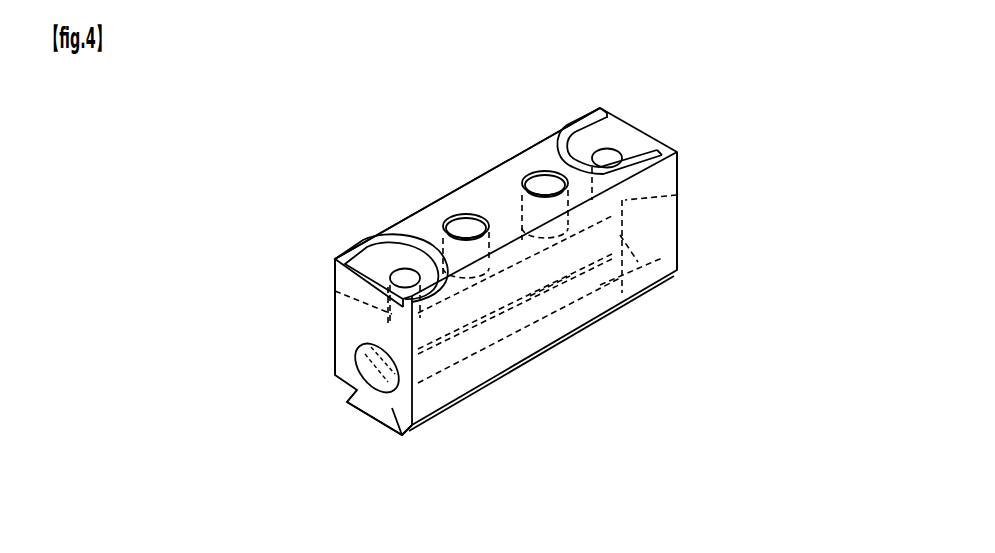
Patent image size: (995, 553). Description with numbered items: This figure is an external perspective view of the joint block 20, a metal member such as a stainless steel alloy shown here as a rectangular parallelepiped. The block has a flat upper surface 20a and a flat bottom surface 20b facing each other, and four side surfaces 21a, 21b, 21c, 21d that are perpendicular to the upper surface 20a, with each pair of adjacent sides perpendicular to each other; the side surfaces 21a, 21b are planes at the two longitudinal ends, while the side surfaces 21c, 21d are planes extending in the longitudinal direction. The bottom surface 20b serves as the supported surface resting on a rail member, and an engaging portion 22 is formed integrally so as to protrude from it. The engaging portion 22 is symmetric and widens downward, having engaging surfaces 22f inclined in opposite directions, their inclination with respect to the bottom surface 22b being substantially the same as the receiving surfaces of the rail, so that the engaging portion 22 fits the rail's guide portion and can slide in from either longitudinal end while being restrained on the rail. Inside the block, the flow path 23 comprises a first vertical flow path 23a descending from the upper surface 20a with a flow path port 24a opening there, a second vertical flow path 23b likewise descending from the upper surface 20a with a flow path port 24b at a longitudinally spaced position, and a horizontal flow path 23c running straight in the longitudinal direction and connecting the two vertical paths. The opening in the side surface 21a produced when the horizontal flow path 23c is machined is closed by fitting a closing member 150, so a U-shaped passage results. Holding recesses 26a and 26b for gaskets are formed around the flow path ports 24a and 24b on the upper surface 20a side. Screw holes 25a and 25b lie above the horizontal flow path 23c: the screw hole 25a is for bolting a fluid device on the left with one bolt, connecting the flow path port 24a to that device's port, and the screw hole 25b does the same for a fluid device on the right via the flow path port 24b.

The joint block 20 is at (678, 227).
The upper surface 20a is at (483, 195).
The bottom surface 20b is at (404, 428).
The side surface 21a is at (346, 330).
The side surface 21b is at (677, 175).
The side surface 21c is at (650, 230).
The side surface 21d is at (418, 209).
The engaging portion 22 is at (374, 411).
The bottom surface 22b is at (363, 403).
The engaging surfaces 22f is at (348, 397).
The flow path 23 is at (467, 327).
The first vertical flow path 23a is at (335, 291).
The second vertical flow path 23b is at (677, 195).
The horizontal flow path 23c is at (551, 292).
The flow path port 24a is at (388, 275).
The flow path port 24b is at (623, 162).
The screw hole 25a is at (463, 212).
The screw hole 25b is at (547, 169).
The holding recess 26a is at (347, 270).
The holding recess 26b is at (607, 138).
The closing member 150 is at (360, 362).